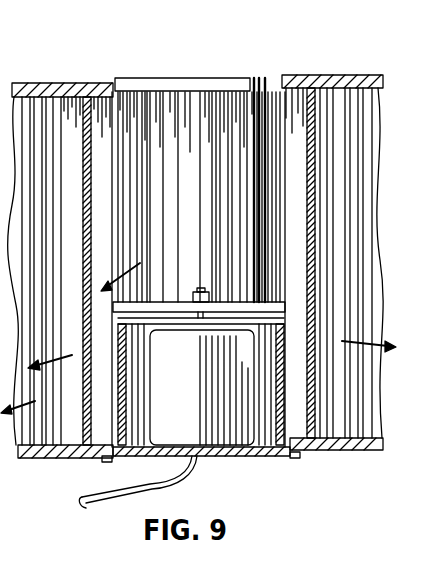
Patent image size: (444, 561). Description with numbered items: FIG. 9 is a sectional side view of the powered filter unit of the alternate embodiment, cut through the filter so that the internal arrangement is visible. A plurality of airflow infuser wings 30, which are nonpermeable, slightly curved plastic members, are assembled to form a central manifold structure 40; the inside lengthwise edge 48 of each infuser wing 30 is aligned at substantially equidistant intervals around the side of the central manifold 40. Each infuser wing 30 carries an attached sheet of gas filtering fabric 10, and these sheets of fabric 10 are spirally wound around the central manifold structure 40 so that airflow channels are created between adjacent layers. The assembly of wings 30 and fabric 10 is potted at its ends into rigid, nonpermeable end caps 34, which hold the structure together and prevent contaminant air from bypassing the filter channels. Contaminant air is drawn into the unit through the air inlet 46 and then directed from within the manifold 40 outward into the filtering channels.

The gas filtering fabric 10 is at (72, 86).
The airflow infuser wing 30 is at (102, 95).
The end cap 34 is at (53, 83).
The central manifold structure 40 is at (194, 90).
The air inlet 46 is at (232, 86).
The inside lengthwise edge 48 is at (164, 92).